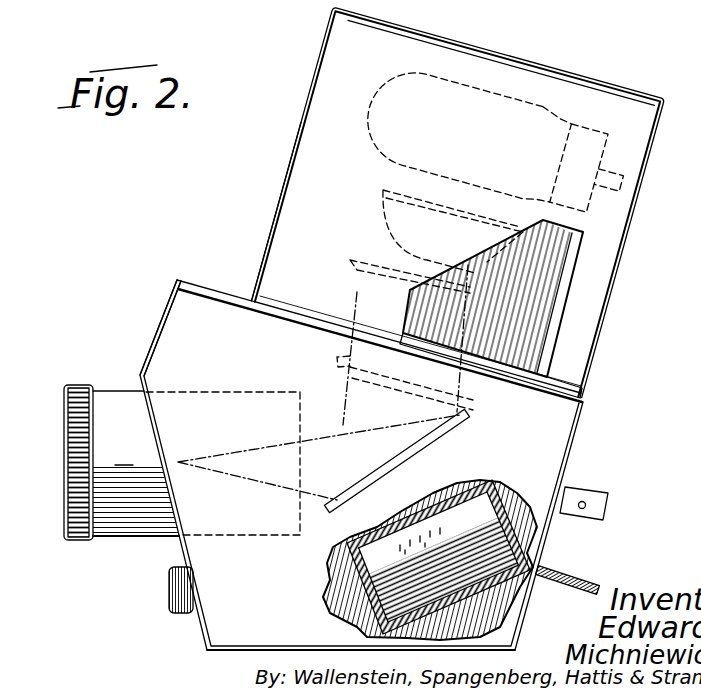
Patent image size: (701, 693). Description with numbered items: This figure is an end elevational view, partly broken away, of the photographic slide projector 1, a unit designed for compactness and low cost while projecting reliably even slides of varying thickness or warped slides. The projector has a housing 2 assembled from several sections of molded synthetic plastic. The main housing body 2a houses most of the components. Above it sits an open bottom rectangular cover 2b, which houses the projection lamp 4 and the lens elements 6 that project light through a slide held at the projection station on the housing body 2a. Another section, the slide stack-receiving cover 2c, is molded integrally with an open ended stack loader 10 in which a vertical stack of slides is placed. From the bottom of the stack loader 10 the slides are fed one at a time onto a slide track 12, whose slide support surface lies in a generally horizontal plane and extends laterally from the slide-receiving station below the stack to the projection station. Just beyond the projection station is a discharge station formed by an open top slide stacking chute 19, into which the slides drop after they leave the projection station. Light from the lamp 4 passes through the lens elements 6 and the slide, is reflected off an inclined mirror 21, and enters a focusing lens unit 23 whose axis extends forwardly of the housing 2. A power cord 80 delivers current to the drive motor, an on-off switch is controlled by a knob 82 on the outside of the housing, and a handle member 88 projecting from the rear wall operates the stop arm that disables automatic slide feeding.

The photographic slide projector 1 is at (292, 61).
The housing 2 is at (158, 303).
The main housing body 2a is at (150, 340).
The open bottom rectangular cover 2b is at (641, 92).
The slide stack-receiving cover 2c is at (301, 302).
The projection lamp 4 is at (548, 108).
The lens elements 6 is at (383, 190).
The stack loader 10 is at (558, 288).
The slide track 12 is at (334, 353).
The slide stacking chute 19 is at (452, 592).
The inclined mirror 21 is at (410, 452).
The focusing lens unit 23 is at (72, 383).
The power cord 80 is at (580, 580).
The knob 82 is at (170, 597).
The handle member 88 is at (602, 489).